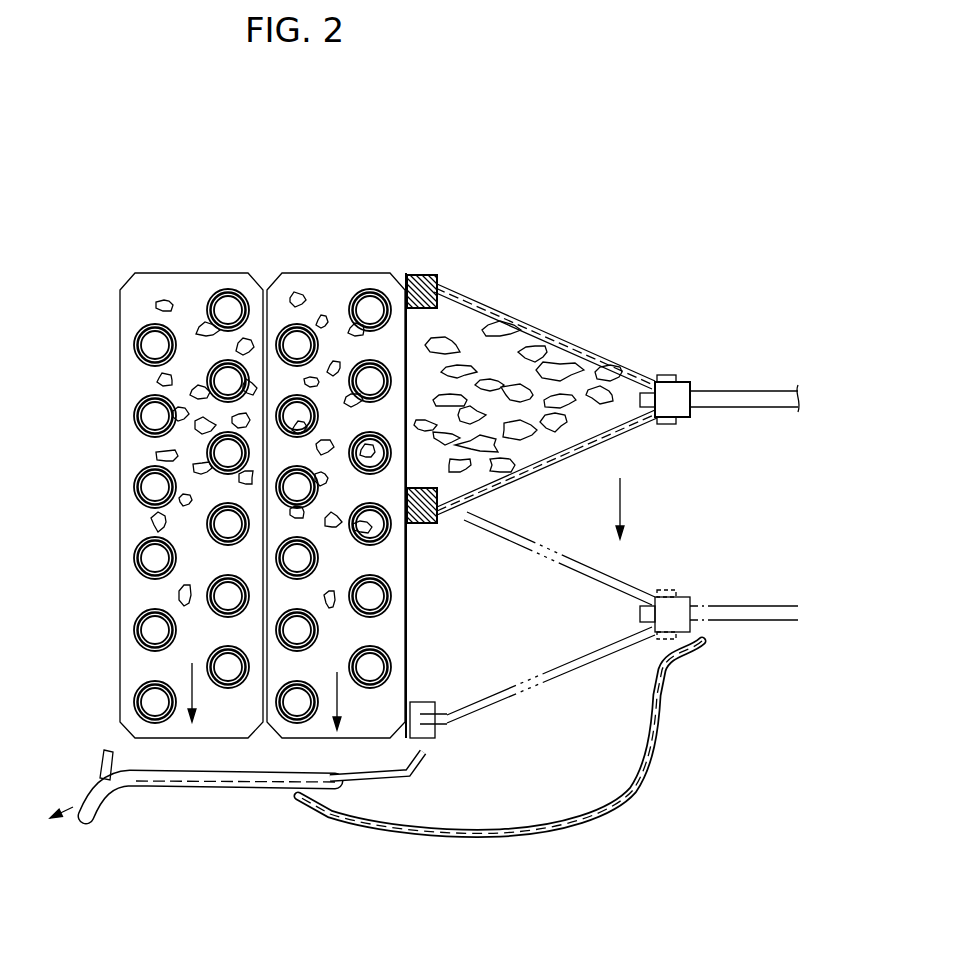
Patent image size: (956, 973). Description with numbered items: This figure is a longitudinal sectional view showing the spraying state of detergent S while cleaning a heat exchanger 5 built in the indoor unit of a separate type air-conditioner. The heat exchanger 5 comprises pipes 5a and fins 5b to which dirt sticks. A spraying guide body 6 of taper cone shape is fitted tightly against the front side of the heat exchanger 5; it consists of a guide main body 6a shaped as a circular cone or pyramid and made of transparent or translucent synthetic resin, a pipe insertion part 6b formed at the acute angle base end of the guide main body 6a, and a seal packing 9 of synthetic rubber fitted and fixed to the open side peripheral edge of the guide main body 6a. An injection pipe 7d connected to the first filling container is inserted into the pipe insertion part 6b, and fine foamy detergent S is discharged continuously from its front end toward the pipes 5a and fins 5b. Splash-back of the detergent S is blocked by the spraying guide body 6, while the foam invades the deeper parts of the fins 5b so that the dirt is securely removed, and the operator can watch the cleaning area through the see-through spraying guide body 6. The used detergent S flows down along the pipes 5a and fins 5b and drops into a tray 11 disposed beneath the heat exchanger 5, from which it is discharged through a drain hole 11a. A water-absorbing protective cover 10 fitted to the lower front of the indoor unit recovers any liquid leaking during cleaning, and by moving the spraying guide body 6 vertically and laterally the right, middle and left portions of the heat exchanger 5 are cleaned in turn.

The heat exchanger 5 is at (235, 449).
The pipes 5a is at (140, 407).
The fins 5b is at (138, 296).
The detergent S is at (287, 322).
The spraying guide body 6 is at (609, 507).
The guide main body 6a is at (613, 358).
The pipe insertion part 6b is at (677, 403).
The injection pipe 7d is at (742, 395).
The seal packing 9 is at (420, 525).
The protective cover 10 is at (570, 820).
The tray 11 is at (230, 792).
The drain hole 11a is at (98, 776).